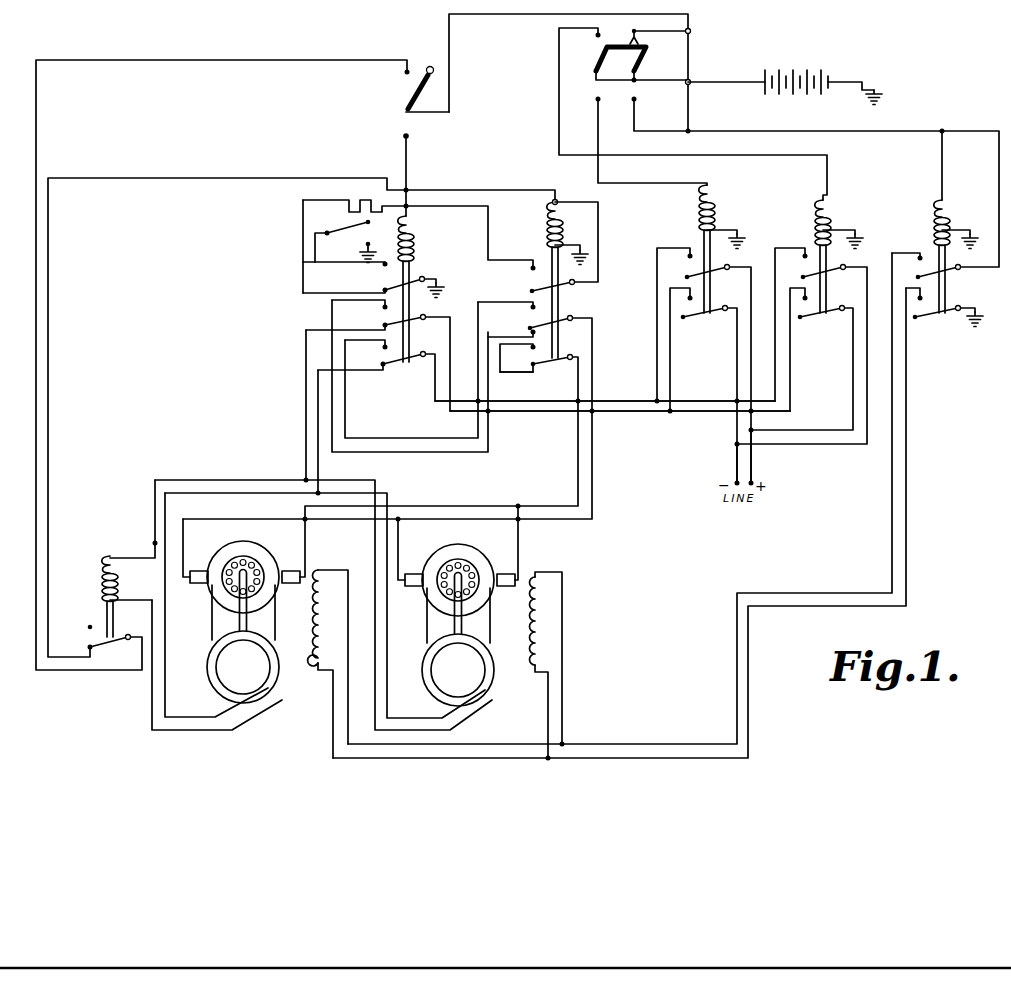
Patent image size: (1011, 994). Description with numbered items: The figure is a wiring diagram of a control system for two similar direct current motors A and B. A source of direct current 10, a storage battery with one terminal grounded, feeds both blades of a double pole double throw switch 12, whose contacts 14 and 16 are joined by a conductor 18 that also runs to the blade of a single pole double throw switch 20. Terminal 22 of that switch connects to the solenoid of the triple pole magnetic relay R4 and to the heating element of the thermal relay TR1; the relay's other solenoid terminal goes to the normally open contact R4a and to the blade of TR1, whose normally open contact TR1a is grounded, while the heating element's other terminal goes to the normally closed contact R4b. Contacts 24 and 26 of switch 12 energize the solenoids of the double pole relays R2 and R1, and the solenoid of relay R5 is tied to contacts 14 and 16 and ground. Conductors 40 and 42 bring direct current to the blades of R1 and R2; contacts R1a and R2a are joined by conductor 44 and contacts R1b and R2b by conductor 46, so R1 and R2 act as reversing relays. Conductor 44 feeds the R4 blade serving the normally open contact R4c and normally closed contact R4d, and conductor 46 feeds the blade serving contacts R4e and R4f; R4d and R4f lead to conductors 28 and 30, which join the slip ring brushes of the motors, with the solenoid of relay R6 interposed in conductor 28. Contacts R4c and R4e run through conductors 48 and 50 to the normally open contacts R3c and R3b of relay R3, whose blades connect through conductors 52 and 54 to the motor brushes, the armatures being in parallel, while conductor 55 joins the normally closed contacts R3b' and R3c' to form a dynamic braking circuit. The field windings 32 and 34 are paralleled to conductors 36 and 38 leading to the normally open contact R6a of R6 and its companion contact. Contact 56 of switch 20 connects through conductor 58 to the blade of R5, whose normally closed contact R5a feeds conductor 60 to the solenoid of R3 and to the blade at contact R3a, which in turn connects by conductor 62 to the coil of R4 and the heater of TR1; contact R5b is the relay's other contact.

The source of direct current 10 is at (798, 66).
The double pole double throw switch 12 is at (670, 73).
The contact of switch 12 14 is at (641, 35).
The contact of switch 12 16 is at (640, 100).
The conductor 18 is at (508, 16).
The single pole double throw switch 20 is at (404, 92).
The terminal of switch 20 22 is at (410, 138).
The contact of double pole switch 12 24 is at (597, 37).
The contact of double pole switch 12 26 is at (596, 99).
The conductor 28 is at (304, 448).
The conductor 30 is at (318, 468).
The field winding of motor A 32 is at (336, 602).
The field winding of motor B 34 is at (554, 602).
The conductor 36 is at (736, 708).
The conductor 38 is at (770, 724).
The conductor 40 is at (733, 462).
The conductor 42 is at (755, 460).
The conductor 44 is at (612, 403).
The conductor 46 is at (614, 418).
The conductor 48 is at (418, 452).
The conductor 50 is at (392, 430).
The conductor 52 is at (598, 466).
The conductor 54 is at (576, 465).
The conductor 55 is at (517, 372).
The contact of switch 20 56 is at (400, 74).
The conductor 58 is at (36, 257).
The conductor 60 is at (50, 261).
The conductor 62 is at (440, 205).
The thermal relay TR1 is at (354, 195).
The normally open contact of thermal relay TR1 TR1a is at (339, 246).
The double pole relay R1 is at (839, 256).
The contact of relay R1 R1a is at (802, 255).
The contact of relay R1 R1b is at (802, 311).
The double pole relay R2 is at (722, 249).
The contact of relay R2 R2a is at (686, 255).
The contact of relay R2 R2b is at (684, 311).
The relay R3 is at (567, 279).
The normally open contact of relay R3 R3a is at (529, 268).
The normally open contact of relay R3 R3b is at (507, 311).
The normally closed contact of relay R3 R3b' is at (537, 364).
The normally open contact of relay R3 R3c is at (518, 358).
The normally closed contact of relay R3 R3c' is at (554, 378).
The triple pole magnetic relay R4 is at (417, 289).
The normally open contact of relay R4 R4a is at (380, 266).
The normally closed contact of relay R4 R4b is at (380, 290).
The normally open contact of relay R4 R4c is at (382, 307).
The normally closed contact of relay R4 R4d is at (380, 327).
The normally open contact of relay R4 R4e is at (382, 347).
The normally closed contact of relay R4 R4f is at (398, 368).
The double pole relay R5 is at (956, 256).
The normally closed contact of relay R5 R5a is at (920, 258).
The relay R5 contact R5b is at (921, 311).
The relay R6 is at (114, 558).
The normally open contact of relay R6 R6a is at (84, 646).
The direct current motor A is at (244, 611).
The direct current motor B is at (458, 606).